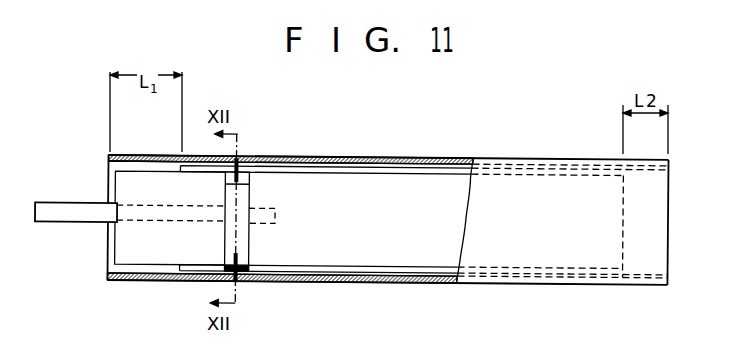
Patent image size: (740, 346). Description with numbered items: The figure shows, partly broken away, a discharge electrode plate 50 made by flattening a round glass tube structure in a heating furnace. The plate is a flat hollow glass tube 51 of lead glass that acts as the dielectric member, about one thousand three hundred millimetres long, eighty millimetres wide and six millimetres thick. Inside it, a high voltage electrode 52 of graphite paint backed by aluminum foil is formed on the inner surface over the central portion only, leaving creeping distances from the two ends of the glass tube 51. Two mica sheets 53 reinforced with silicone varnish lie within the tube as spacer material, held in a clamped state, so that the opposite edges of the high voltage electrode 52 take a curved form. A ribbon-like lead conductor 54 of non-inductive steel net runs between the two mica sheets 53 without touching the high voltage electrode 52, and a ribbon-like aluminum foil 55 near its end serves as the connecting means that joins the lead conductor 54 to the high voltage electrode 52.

The discharge electrode plate 50 is at (549, 152).
The glass tube 51 is at (131, 152).
The high voltage electrode 52 is at (192, 268).
The mica sheets 53 is at (142, 253).
The lead conductor 54 is at (90, 220).
The ribbon-like aluminum foil 55 is at (245, 198).